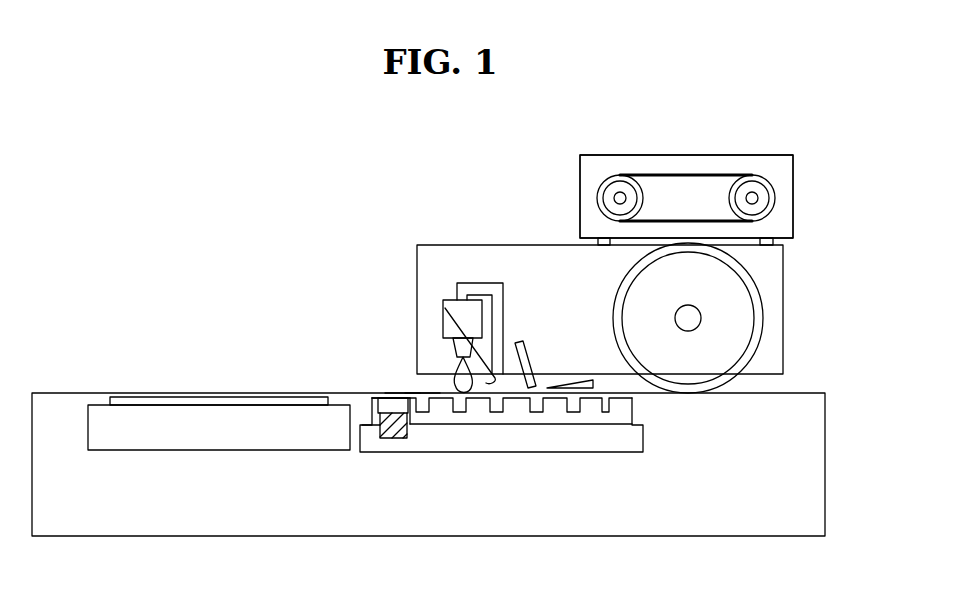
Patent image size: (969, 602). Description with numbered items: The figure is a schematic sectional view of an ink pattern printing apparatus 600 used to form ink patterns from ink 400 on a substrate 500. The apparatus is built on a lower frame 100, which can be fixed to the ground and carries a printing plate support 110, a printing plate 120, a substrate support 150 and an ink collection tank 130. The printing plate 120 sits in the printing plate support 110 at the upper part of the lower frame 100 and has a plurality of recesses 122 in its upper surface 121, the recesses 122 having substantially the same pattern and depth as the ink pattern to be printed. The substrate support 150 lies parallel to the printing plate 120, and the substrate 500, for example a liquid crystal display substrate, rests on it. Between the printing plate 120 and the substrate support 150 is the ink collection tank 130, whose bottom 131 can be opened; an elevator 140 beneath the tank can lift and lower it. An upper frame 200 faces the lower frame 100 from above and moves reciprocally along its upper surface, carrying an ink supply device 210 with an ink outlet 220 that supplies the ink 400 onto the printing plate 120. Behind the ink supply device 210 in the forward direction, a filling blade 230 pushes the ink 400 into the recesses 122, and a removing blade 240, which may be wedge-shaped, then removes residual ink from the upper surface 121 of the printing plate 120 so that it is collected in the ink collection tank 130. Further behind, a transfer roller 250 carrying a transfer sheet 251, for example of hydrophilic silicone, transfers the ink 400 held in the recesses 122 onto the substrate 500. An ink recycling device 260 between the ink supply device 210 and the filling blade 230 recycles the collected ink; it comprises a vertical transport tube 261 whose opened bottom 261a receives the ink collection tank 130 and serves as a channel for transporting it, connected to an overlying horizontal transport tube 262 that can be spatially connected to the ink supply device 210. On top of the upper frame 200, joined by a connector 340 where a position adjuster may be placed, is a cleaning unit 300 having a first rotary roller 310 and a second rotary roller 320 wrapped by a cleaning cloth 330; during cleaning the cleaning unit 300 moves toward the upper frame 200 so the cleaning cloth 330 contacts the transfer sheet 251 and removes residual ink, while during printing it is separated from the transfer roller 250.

The lower frame 100 is at (668, 477).
The printing plate support 110 is at (532, 438).
The printing plate 120 is at (613, 413).
The upper surface of the printing plate 121 is at (397, 392).
The recesses 122 is at (420, 391).
The ink collection tank 130 is at (364, 398).
The bottom of the ink collection tank 131 is at (397, 440).
The elevator 140 is at (389, 440).
The substrate support 150 is at (263, 432).
The upper frame 200 is at (771, 345).
The ink supply device 210 is at (443, 318).
The ink outlet 220 is at (458, 352).
The filling blade 230 is at (528, 342).
The removing blade 240 is at (573, 383).
The transfer roller 250 is at (736, 310).
The transfer sheet 251 is at (740, 262).
The ink recycling device 260 is at (500, 275).
The vertical transport tube 261 is at (500, 305).
The bottom of the vertical transport tube 261a is at (445, 308).
The horizontal transport tube 262 is at (489, 283).
The cleaning unit 300 is at (788, 187).
The first rotary roller 310 is at (633, 180).
The second rotary roller 320 is at (750, 178).
The cleaning cloth 330 is at (680, 173).
The connector 340 is at (603, 238).
The ink 400 is at (463, 395).
The substrate 500 is at (163, 400).
The ink pattern printing apparatus 600 is at (806, 157).